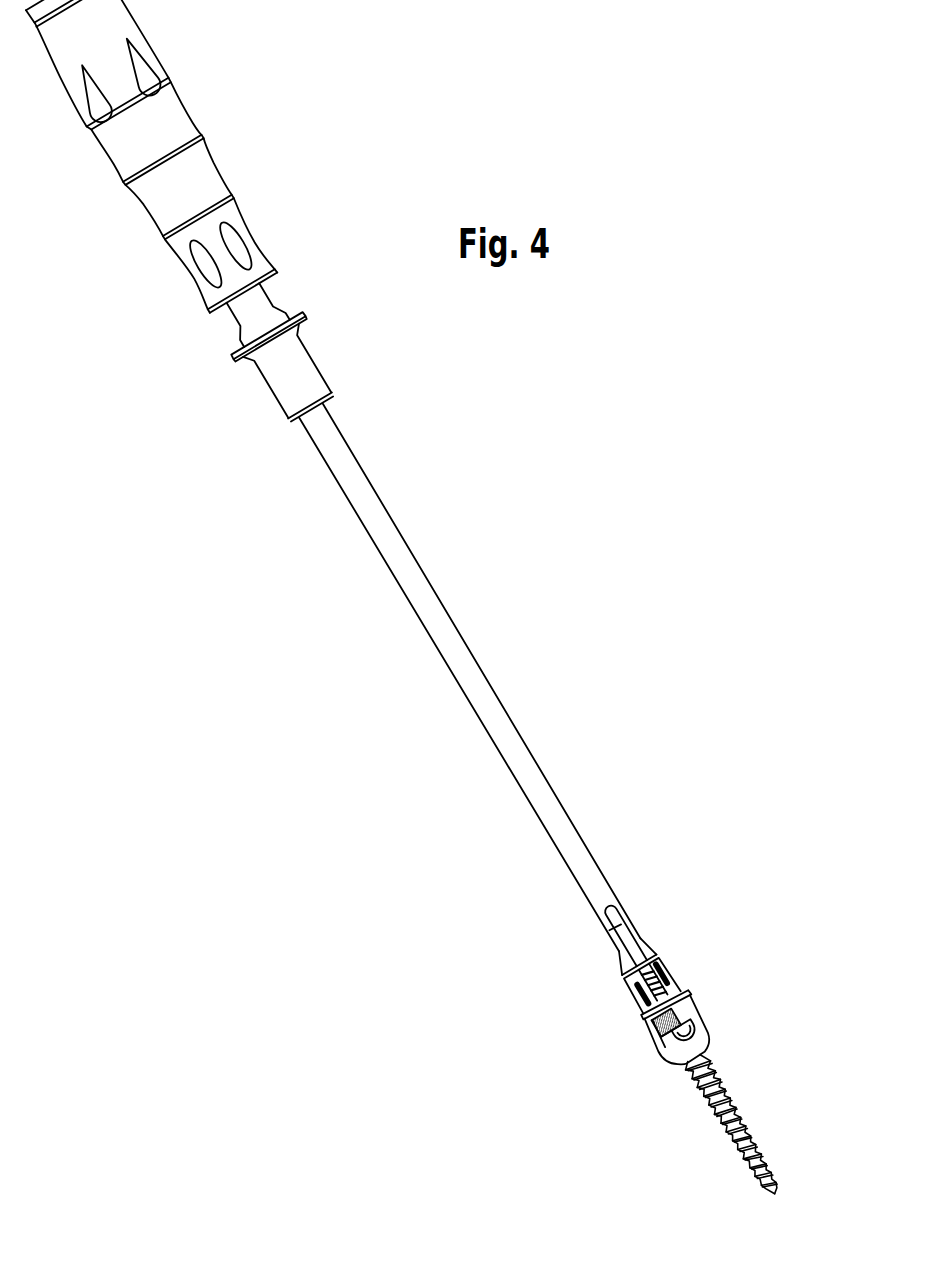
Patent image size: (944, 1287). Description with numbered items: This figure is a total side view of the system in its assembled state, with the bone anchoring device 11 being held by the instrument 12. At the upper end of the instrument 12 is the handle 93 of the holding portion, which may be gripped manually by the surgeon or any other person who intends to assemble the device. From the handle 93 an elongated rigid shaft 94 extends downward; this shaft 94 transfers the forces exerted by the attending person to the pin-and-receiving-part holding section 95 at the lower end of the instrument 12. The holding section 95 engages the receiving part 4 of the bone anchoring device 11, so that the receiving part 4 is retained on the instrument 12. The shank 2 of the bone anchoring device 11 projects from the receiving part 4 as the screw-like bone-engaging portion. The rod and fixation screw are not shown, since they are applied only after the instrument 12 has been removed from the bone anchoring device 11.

The shank 2 is at (764, 1134).
The receiving part 4 is at (641, 1042).
The bone anchoring device 11 is at (763, 1025).
The instrument 12 is at (580, 749).
The handle 93 is at (205, 178).
The elongated rigid shaft 94 is at (447, 632).
The pin-and-receiving-part holding section 95 is at (634, 939).